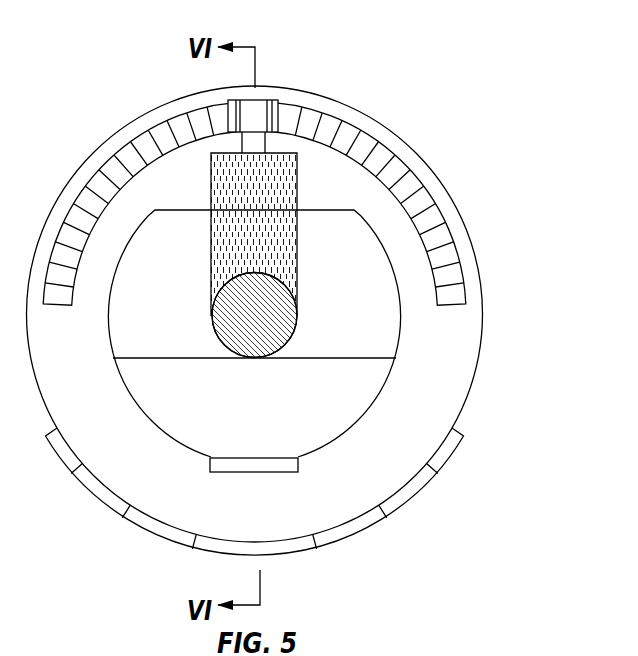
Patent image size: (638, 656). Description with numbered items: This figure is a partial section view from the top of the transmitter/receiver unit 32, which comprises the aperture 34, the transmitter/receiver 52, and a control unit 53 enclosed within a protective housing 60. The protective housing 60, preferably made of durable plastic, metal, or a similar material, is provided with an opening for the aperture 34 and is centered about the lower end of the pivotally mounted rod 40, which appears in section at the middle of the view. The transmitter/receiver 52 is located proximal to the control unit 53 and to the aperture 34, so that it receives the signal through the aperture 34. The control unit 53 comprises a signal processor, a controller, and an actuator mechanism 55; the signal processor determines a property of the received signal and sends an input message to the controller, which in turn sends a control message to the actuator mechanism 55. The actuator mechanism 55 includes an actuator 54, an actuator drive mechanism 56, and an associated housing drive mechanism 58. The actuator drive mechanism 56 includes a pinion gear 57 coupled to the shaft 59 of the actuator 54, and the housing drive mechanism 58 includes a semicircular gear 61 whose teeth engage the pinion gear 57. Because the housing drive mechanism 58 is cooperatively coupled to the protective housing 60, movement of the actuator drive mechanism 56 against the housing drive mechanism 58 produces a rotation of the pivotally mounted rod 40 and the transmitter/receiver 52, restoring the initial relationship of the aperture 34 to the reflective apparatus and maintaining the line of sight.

The transmitter/receiver unit 32 is at (306, 284).
The aperture 34 is at (257, 472).
The pivotally mounted rod 40 is at (269, 327).
The transmitter/receiver 52 is at (269, 424).
The control unit 53 is at (176, 306).
The actuator 54 is at (268, 248).
The actuator mechanism 55 is at (319, 300).
The actuator drive mechanism 56 is at (283, 97).
The pinion gear 57 is at (310, 73).
The housing drive mechanism 58 is at (307, 204).
The shaft 59 is at (257, 147).
The protective housing 60 is at (482, 288).
The semicircular gear 61 is at (437, 240).